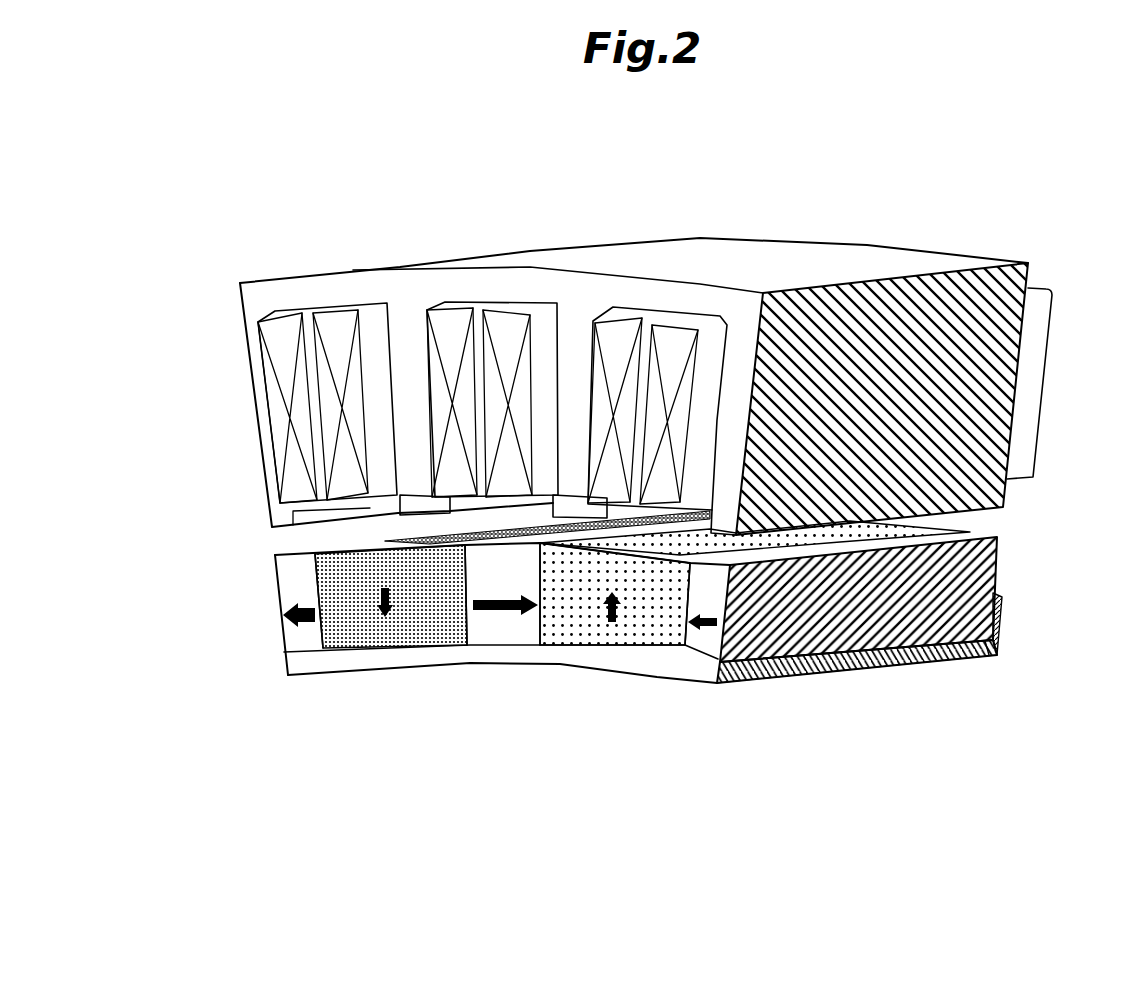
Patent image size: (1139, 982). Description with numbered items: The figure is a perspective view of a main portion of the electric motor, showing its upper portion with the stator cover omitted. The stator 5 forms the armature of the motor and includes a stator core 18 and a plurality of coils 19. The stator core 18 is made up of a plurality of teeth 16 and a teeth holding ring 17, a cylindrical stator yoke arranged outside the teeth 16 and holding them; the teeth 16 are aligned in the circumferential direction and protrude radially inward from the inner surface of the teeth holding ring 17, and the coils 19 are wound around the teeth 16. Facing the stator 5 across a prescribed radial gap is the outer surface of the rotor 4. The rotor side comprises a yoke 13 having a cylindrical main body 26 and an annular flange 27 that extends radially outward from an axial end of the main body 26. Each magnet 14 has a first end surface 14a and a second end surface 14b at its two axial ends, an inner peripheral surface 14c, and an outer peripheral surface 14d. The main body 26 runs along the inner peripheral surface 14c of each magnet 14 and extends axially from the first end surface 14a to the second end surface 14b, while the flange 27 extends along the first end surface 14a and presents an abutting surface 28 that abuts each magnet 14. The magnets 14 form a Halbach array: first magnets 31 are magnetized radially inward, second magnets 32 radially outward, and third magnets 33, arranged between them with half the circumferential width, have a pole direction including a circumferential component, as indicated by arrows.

The rotor 4 is at (815, 682).
The stator 5 is at (1057, 263).
The yoke 13 is at (442, 653).
The magnet 14 is at (272, 612).
The first end surface 14a is at (997, 570).
The second end surface 14b is at (703, 640).
The inner peripheral surface 14c is at (765, 673).
The outer peripheral surface 14d is at (970, 531).
The teeth 16 is at (408, 328).
The teeth holding ring 17 is at (320, 288).
The stator core 18 is at (902, 242).
The coil 19 is at (607, 327).
The main body 26 is at (872, 673).
The flange 27 is at (1002, 598).
The abutting surface 28 is at (973, 660).
The first magnet 31 is at (365, 633).
The second magnet 32 is at (575, 625).
The third magnet 33 is at (290, 633).